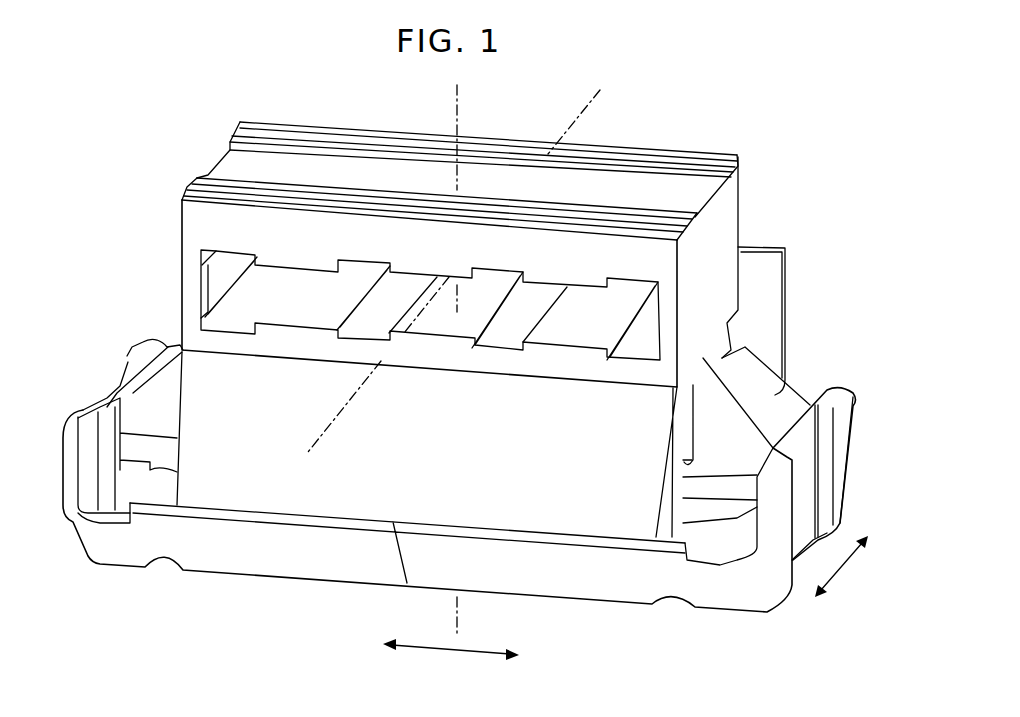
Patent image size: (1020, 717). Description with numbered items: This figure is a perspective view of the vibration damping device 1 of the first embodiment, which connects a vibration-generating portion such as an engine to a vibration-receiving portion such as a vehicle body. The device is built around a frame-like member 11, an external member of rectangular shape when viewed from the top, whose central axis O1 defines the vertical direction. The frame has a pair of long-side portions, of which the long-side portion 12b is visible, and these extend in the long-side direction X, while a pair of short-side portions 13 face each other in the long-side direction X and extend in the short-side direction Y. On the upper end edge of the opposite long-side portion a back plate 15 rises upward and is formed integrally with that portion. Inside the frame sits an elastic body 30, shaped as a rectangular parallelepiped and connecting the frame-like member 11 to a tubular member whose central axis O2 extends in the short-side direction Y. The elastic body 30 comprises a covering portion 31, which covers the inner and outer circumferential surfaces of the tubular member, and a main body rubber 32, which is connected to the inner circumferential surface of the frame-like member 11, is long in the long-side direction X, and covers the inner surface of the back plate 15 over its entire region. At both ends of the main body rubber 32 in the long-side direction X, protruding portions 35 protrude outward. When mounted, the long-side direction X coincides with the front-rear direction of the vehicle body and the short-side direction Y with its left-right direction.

The vibration damping device 1 is at (781, 127).
The frame-like member 11 is at (84, 573).
The long-side portion 12b is at (306, 566).
The short-side portion 13 is at (82, 416).
The back plate 15 is at (772, 252).
The elastic body 30 is at (729, 148).
The covering portion 31 is at (727, 212).
The main body rubber 32 is at (645, 403).
The protruding portion 35 is at (157, 396).
The central axis of the frame-like member O1 is at (452, 88).
The central axis of the tubular member O2 is at (605, 88).
The long-side direction X is at (451, 657).
The short-side direction Y is at (841, 566).